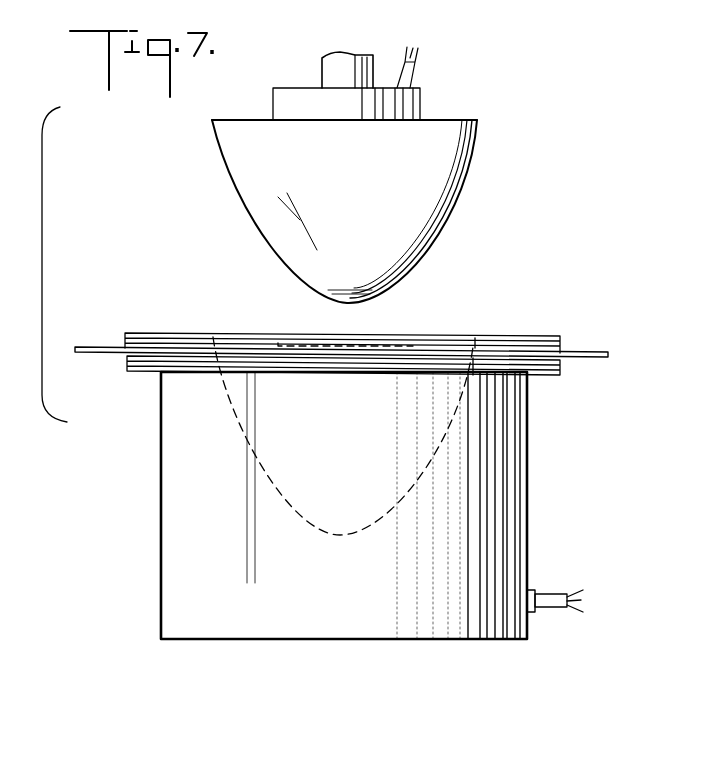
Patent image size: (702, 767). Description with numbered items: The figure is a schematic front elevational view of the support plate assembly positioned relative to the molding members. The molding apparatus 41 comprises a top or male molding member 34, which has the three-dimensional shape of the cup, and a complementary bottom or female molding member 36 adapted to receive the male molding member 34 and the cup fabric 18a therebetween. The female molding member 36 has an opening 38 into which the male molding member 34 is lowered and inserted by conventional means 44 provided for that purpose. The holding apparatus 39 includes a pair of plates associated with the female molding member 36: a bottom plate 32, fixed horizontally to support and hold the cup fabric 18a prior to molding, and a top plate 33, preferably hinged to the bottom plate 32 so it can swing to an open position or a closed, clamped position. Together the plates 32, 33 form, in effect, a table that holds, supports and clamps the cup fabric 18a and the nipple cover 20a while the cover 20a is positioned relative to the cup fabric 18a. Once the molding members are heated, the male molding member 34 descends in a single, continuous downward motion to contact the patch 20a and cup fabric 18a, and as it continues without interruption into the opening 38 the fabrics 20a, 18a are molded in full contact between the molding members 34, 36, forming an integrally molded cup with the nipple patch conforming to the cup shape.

The molding apparatus 41 is at (187, 245).
The conventional means for lowering and inserting the male molding member 44 is at (372, 62).
The top or male molding member 34 is at (445, 193).
The holding apparatus 39 is at (545, 305).
The top plate 33 is at (560, 340).
The cup fabric 18a is at (107, 348).
The bottom plate 32 is at (560, 375).
The nipple cover 20a is at (413, 346).
The opening of the female molding member 38 is at (452, 437).
The bottom or female molding member 36 is at (495, 518).